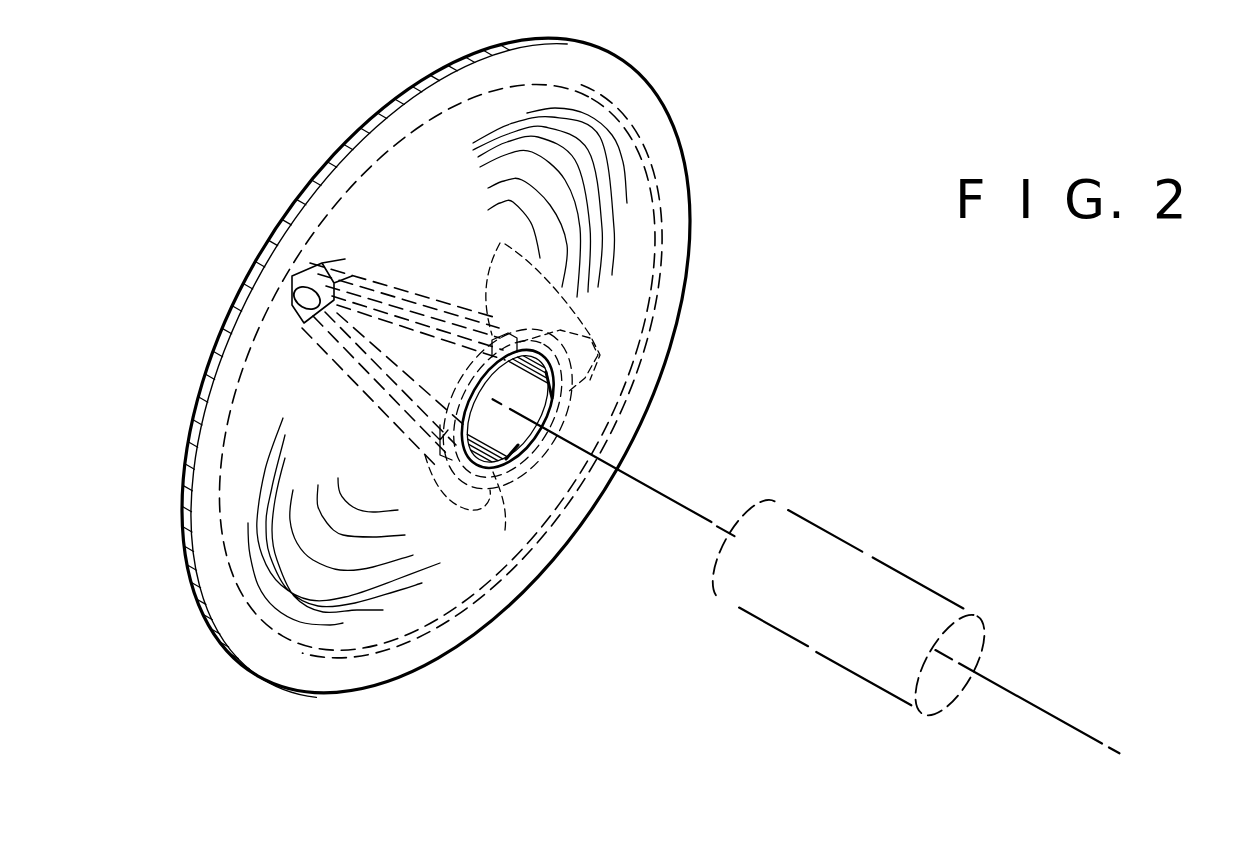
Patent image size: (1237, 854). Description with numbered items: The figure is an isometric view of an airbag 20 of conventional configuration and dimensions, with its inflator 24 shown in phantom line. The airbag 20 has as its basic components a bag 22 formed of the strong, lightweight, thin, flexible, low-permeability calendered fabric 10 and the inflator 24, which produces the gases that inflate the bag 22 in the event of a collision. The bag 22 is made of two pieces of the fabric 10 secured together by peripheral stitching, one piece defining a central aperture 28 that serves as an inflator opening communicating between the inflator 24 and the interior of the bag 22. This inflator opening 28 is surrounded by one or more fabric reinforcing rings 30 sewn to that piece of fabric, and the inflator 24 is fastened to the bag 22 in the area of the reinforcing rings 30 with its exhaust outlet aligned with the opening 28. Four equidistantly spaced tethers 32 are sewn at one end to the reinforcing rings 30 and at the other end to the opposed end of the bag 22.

The fabric 10 is at (292, 594).
The airbag 20 is at (266, 207).
The bag 22 is at (485, 617).
The inflator 24 is at (860, 556).
The central aperture 28 is at (533, 407).
The fabric reinforcing rings 30 is at (592, 503).
The tethers 32 is at (500, 243).